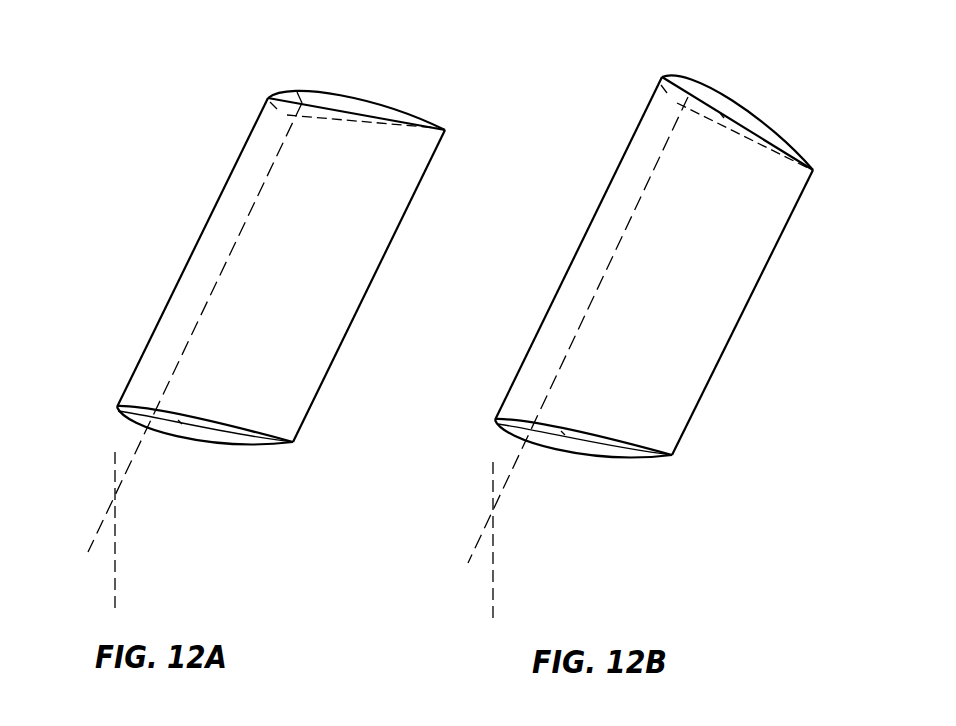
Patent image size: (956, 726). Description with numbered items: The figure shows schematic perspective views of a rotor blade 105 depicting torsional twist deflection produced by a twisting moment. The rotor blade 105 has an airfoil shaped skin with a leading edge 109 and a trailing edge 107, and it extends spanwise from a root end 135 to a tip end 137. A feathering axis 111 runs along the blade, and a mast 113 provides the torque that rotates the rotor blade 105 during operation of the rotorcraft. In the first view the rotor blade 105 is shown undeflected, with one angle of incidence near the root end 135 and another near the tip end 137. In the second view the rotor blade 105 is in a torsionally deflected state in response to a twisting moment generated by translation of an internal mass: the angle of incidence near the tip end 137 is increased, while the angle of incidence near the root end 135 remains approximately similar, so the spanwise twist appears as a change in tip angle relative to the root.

In FIG. 12A, the rotor blade 105 is at (273, 281).
In FIG. 12B, the rotor blade 105 is at (663, 300).
In FIG. 12A, the trailing edge 107 is at (382, 286).
In FIG. 12B, the trailing edge 107 is at (757, 302).
In FIG. 12A, the leading edge 109 is at (160, 298).
In FIG. 12B, the leading edge 109 is at (542, 306).
In FIG. 12A, the feathering axis 111 is at (130, 465).
In FIG. 12B, the feathering axis 111 is at (510, 473).
In FIG. 12A, the mast 113 is at (118, 551).
In FIG. 12B, the mast 113 is at (494, 560).
In FIG. 12A, the root end 135 is at (214, 452).
In FIG. 12B, the root end 135 is at (595, 460).
In FIG. 12A, the tip end 137 is at (365, 90).
In FIG. 12B, the tip end 137 is at (784, 132).